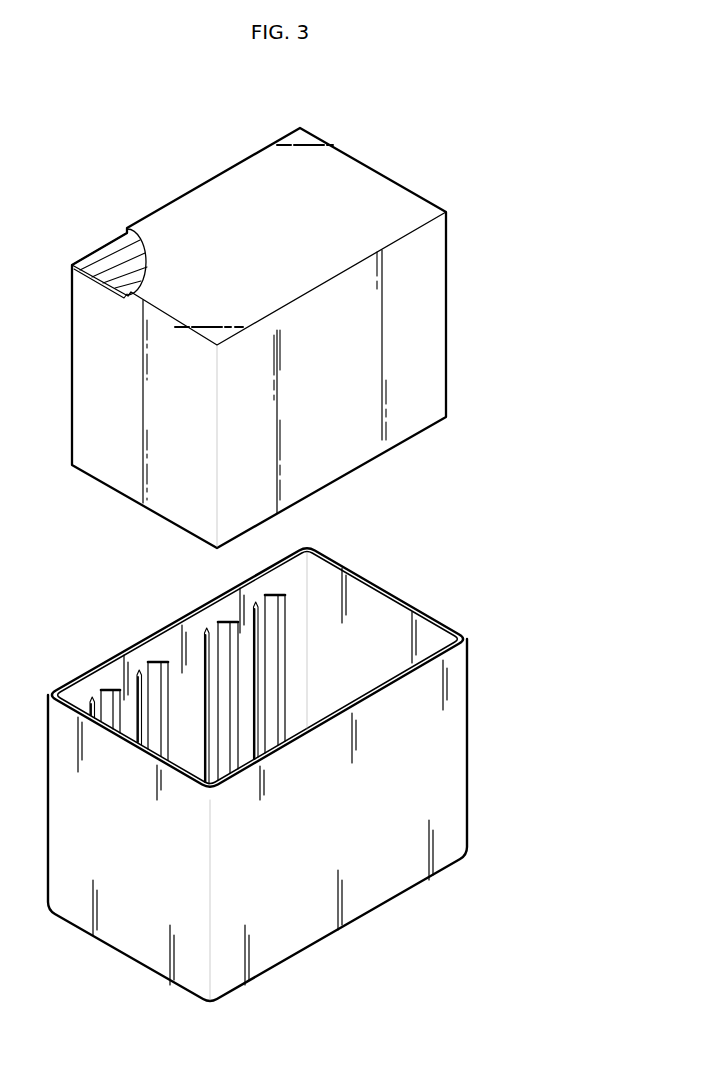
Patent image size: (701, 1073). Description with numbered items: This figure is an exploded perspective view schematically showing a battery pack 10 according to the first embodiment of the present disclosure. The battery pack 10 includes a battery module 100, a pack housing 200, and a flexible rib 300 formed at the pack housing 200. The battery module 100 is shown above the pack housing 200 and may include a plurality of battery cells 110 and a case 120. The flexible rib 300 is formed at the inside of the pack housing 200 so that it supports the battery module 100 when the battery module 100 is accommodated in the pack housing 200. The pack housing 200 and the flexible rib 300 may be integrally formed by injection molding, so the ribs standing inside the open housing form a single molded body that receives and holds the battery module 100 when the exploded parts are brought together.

The battery pack 10 is at (96, 98).
The battery module 100 is at (142, 181).
The battery cells 110 is at (118, 263).
The case 120 is at (432, 328).
The pack housing 200 is at (465, 611).
The flexible rib 300 is at (156, 669).